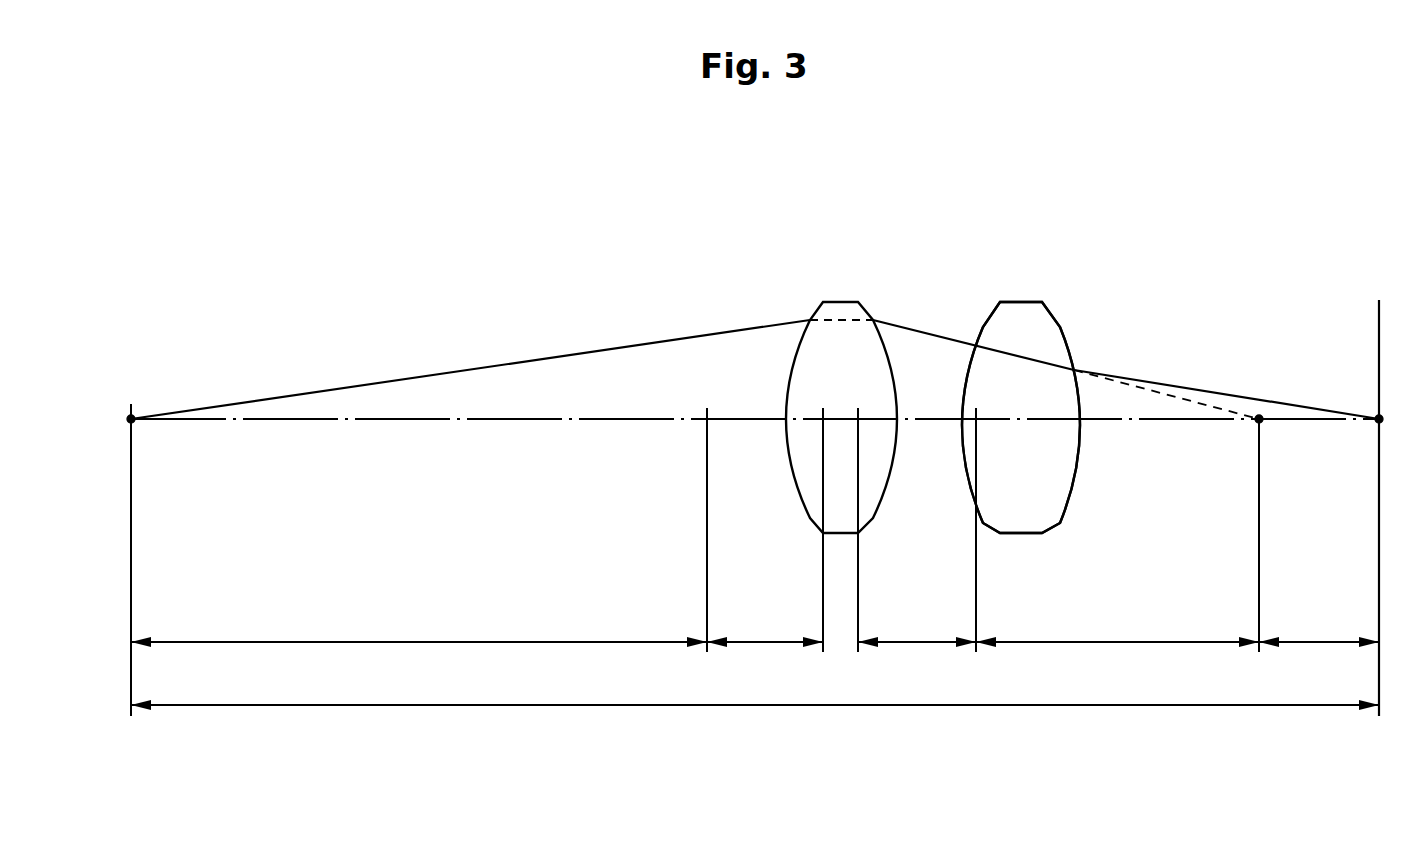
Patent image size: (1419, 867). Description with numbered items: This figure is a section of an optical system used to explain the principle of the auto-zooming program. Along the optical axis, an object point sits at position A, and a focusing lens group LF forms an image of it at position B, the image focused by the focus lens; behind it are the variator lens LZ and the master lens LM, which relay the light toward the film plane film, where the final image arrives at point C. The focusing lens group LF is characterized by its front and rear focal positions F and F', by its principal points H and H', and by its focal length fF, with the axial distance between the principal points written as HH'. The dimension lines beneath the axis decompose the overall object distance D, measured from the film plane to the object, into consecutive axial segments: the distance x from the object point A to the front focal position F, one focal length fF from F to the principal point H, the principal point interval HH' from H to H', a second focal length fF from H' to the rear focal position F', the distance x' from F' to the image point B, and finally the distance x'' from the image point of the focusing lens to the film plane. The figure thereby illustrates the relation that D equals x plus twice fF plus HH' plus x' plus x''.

The object point position A is at (119, 420).
The image position of focus lens B is at (1249, 434).
The image point on film surface C is at (1388, 433).
The front focal position of focusing lens F is at (704, 404).
The front principal point H is at (821, 404).
The rear principal point H' is at (860, 404).
The rear focal position of focusing lens F' is at (978, 404).
The focusing lens group LF is at (845, 308).
The variator lens LZ is at (1020, 312).
The master lens LM is at (1021, 380).
The film plane film is at (1379, 318).
The object-side distance x is at (403, 623).
The focal length of focusing lens fF is at (834, 622).
The image-side distance x' is at (1100, 623).
The distance from image point of focusing lens to film plane x'' is at (1316, 623).
The object distance D is at (765, 688).
The axial distance between principal points of focusing lens HH' is at (873, 663).